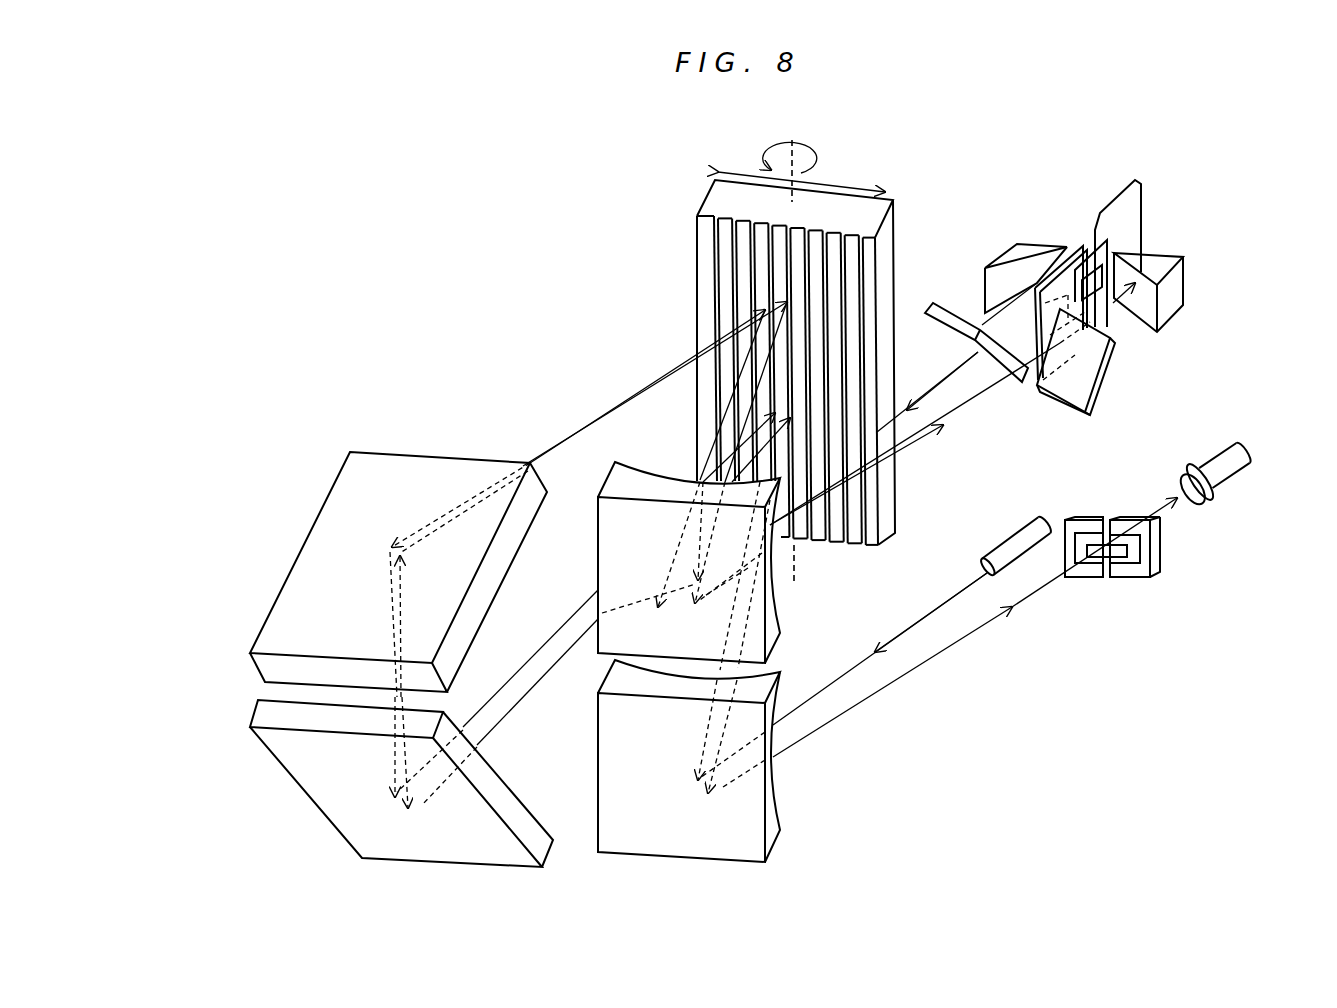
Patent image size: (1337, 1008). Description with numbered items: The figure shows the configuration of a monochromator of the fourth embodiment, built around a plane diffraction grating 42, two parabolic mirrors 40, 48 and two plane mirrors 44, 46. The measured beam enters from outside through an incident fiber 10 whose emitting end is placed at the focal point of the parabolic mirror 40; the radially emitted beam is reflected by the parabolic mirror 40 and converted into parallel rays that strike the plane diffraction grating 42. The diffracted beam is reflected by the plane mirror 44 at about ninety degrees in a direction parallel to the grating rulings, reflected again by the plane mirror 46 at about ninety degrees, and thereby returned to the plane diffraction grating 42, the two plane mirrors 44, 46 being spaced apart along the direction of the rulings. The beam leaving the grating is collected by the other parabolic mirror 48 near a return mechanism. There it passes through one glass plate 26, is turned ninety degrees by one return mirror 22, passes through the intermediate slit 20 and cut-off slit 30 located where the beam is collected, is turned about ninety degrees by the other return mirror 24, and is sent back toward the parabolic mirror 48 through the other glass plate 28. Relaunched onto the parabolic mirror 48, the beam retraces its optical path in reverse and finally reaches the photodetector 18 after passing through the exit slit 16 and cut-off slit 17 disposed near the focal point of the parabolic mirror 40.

The incident fiber 10 is at (1017, 538).
The exit slit 16 is at (1152, 549).
The cut-off slit 17 is at (1145, 575).
The photodetector 18 is at (1240, 452).
The intermediate slit 20 is at (1135, 196).
The return mirror 22 is at (1170, 289).
The return mirror 24 is at (1012, 250).
The glass plate 26 is at (1085, 373).
The glass plate 28 is at (930, 300).
The cut-off slit 30 is at (1100, 252).
The parabolic mirror 40 is at (780, 830).
The plane diffraction grating 42 is at (712, 207).
The plane mirror 44 is at (340, 826).
The plane mirror 46 is at (325, 511).
The parabolic mirror 48 is at (783, 620).